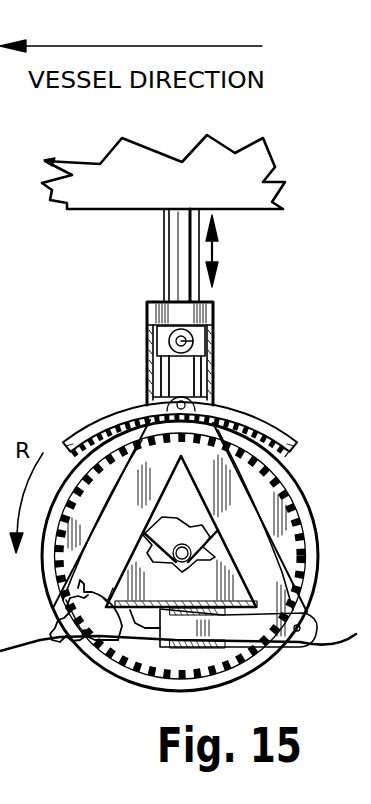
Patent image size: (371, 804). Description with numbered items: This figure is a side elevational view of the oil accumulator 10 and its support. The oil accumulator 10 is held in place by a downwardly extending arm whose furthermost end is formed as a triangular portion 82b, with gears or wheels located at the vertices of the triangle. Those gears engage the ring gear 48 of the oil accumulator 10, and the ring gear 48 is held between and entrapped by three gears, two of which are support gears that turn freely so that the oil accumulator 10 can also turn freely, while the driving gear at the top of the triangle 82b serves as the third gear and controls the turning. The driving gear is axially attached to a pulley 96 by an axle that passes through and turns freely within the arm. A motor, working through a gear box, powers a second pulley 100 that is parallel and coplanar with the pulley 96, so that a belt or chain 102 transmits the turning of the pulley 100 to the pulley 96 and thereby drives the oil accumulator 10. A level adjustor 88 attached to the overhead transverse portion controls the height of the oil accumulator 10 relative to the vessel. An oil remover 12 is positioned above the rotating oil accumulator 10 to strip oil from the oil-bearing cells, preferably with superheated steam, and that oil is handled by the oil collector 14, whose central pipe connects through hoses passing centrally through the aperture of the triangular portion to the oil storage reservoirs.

The oil accumulator 10 is at (112, 703).
The oil remover 12 is at (298, 434).
The oil collector 14 is at (225, 568).
The ring gear 48 is at (302, 538).
The triangular portion 82b is at (254, 623).
The level adjustor 88 is at (167, 270).
The pulley 96 is at (214, 389).
The second pulley 100 is at (216, 333).
The belt or chain 102 is at (230, 345).